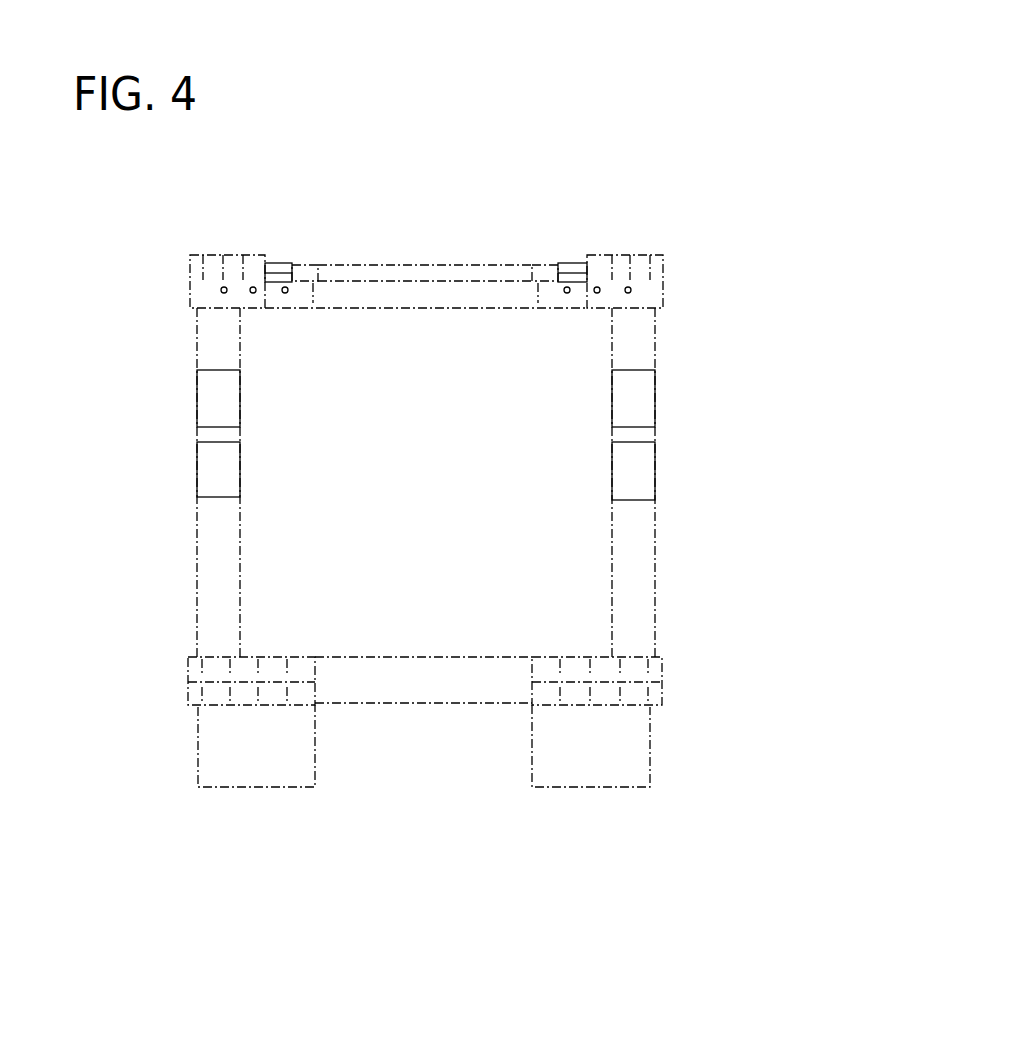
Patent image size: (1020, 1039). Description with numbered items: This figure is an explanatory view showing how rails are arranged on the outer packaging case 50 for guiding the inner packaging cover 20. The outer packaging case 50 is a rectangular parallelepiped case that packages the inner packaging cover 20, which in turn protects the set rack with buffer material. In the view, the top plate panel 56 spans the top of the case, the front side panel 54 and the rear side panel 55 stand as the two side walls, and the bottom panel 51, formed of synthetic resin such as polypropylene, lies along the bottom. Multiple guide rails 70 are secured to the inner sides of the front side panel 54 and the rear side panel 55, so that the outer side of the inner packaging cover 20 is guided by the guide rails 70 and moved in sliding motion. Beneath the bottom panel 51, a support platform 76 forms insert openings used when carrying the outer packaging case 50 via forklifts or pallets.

The outer packaging case 50 is at (692, 238).
The inner packaging cover 20 is at (297, 362).
The top plate panel 56 is at (430, 285).
The rear side panel 55 is at (195, 385).
The front side panel 54 is at (657, 443).
The guide rails 70 is at (215, 393).
The bottom panel 51 is at (385, 698).
The support platform 76 is at (257, 758).